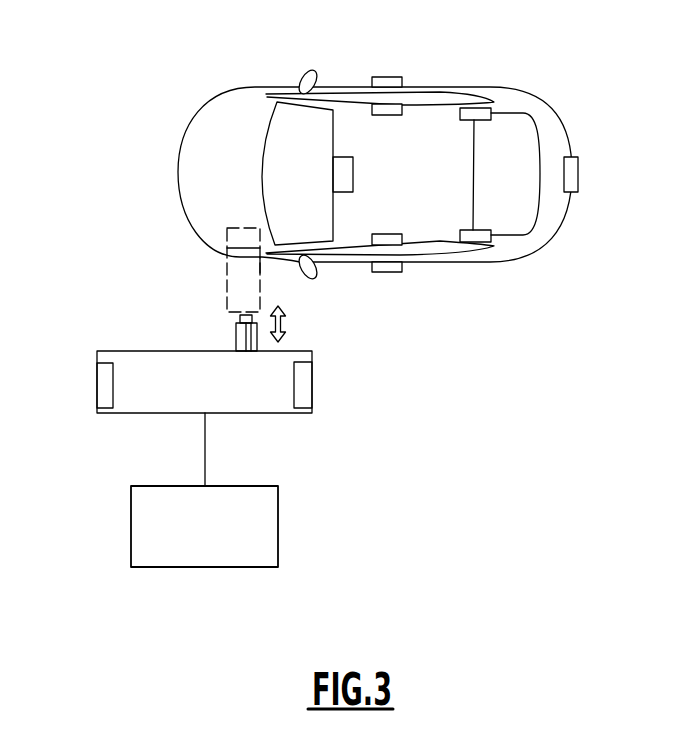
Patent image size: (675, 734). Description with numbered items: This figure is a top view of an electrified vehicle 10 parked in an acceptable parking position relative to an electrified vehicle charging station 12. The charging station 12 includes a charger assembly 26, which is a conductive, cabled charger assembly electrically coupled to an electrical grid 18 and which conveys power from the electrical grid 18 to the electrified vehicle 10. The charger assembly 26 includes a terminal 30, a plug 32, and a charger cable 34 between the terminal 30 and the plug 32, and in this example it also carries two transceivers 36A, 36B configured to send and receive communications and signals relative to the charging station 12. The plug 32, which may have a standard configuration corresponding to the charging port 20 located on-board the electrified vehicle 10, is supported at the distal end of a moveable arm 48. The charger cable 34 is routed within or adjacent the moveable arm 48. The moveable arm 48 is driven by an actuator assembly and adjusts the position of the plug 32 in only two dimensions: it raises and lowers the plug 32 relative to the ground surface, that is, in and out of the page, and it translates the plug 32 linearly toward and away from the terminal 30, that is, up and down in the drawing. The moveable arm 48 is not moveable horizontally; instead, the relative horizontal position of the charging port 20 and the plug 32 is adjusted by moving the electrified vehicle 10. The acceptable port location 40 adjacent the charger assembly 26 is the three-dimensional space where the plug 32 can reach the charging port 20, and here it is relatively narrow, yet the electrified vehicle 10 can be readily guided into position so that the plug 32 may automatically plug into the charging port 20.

The electrified vehicle 10 is at (556, 86).
The electrified vehicle charging station 12 is at (367, 449).
The electrical grid 18 is at (278, 532).
The charging port 20 is at (243, 248).
The charger assembly 26 is at (122, 420).
The terminal 30 is at (247, 392).
The plug 32 is at (240, 317).
The charger cable 34 is at (237, 332).
The transceiver 36A is at (107, 390).
The transceiver 36B is at (308, 392).
The acceptable port location 40 is at (260, 273).
The moveable arm 48 is at (257, 340).